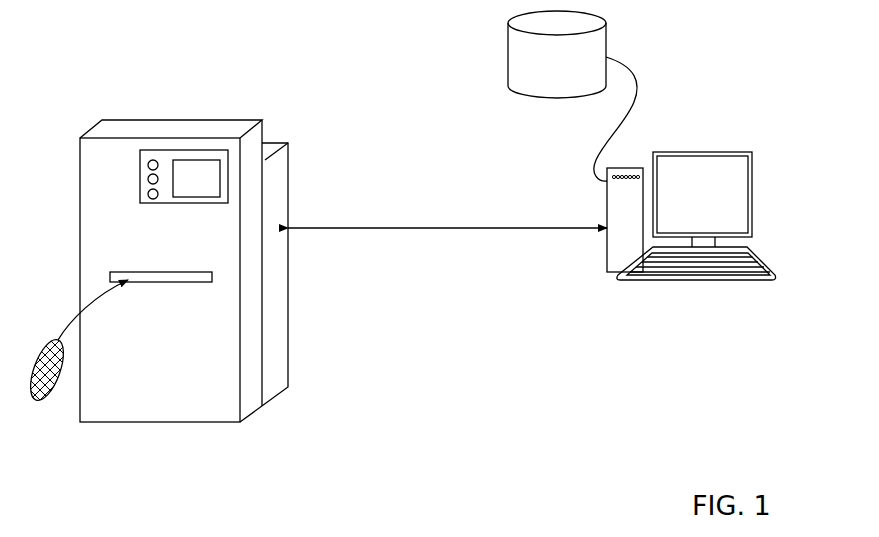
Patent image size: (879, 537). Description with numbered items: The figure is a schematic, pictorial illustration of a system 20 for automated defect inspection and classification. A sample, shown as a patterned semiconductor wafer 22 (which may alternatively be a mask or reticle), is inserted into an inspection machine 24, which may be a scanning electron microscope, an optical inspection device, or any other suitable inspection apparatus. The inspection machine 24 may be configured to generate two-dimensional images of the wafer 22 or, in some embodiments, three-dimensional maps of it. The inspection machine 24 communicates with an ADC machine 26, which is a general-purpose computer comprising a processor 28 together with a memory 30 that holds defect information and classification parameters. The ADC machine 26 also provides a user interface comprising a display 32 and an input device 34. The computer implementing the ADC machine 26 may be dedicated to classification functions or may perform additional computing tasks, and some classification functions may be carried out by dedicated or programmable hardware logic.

The system 20 is at (80, 72).
The patterned semiconductor wafer 22 is at (42, 402).
The inspection machine 24 is at (182, 120).
The ADC machine 26 is at (783, 10).
The processor 28 is at (608, 263).
The memory 30 is at (508, 58).
The display 32 is at (698, 152).
The input device 34 is at (758, 282).